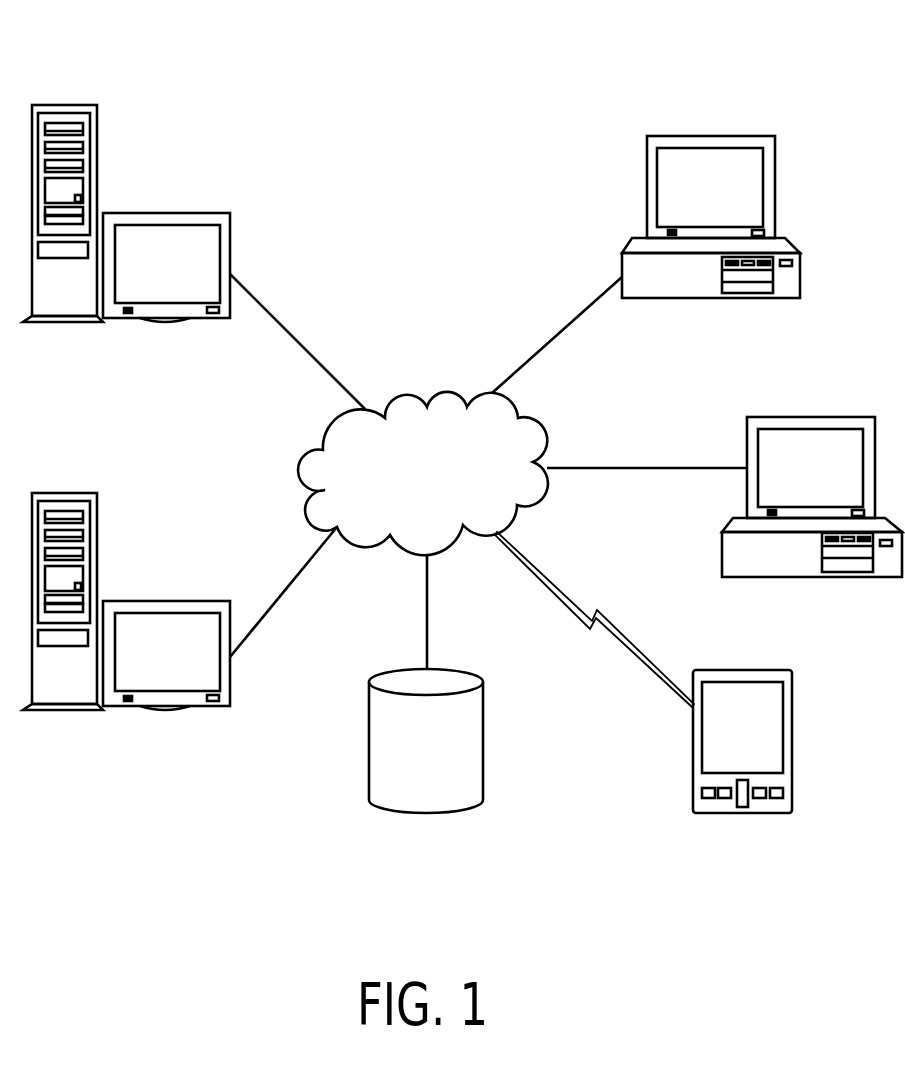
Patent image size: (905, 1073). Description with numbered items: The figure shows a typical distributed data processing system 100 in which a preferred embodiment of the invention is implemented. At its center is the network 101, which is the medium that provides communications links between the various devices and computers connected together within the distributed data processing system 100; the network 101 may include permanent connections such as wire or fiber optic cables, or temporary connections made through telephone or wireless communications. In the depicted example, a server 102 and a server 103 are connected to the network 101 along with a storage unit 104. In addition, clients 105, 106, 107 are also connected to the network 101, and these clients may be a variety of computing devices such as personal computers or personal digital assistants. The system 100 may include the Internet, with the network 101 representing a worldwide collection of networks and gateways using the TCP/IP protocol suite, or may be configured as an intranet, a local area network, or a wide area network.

The distributed data processing system 100 is at (542, 115).
The network 101 is at (449, 507).
The server 102 is at (126, 625).
The server 103 is at (196, 280).
The storage unit 104 is at (457, 790).
The client 105 is at (739, 203).
The client 106 is at (839, 483).
The client 107 is at (773, 742).